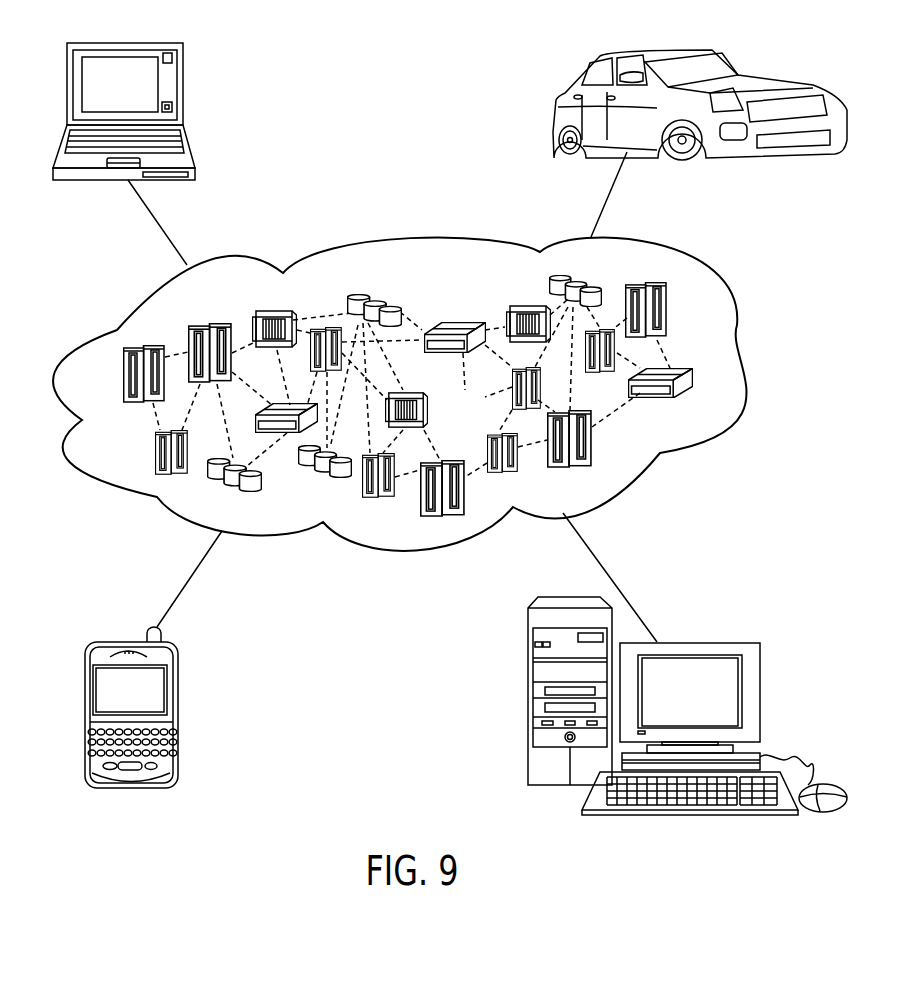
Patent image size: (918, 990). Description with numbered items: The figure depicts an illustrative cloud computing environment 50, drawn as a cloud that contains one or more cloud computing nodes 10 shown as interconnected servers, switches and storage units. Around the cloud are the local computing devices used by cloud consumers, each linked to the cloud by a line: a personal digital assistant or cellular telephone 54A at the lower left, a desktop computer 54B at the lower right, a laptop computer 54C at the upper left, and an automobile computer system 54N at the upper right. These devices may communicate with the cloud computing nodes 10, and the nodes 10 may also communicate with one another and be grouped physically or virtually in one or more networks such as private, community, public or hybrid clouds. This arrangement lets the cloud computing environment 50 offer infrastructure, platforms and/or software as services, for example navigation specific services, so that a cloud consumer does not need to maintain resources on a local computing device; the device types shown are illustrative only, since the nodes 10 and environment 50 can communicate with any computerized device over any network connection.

The cloud computing node 10 is at (724, 400).
The cloud computing environment 50 is at (740, 323).
The personal digital assistant or cellular telephone 54A is at (178, 683).
The desktop computer 54B is at (688, 643).
The laptop computer 54C is at (183, 80).
The automobile computer system 54N is at (556, 104).